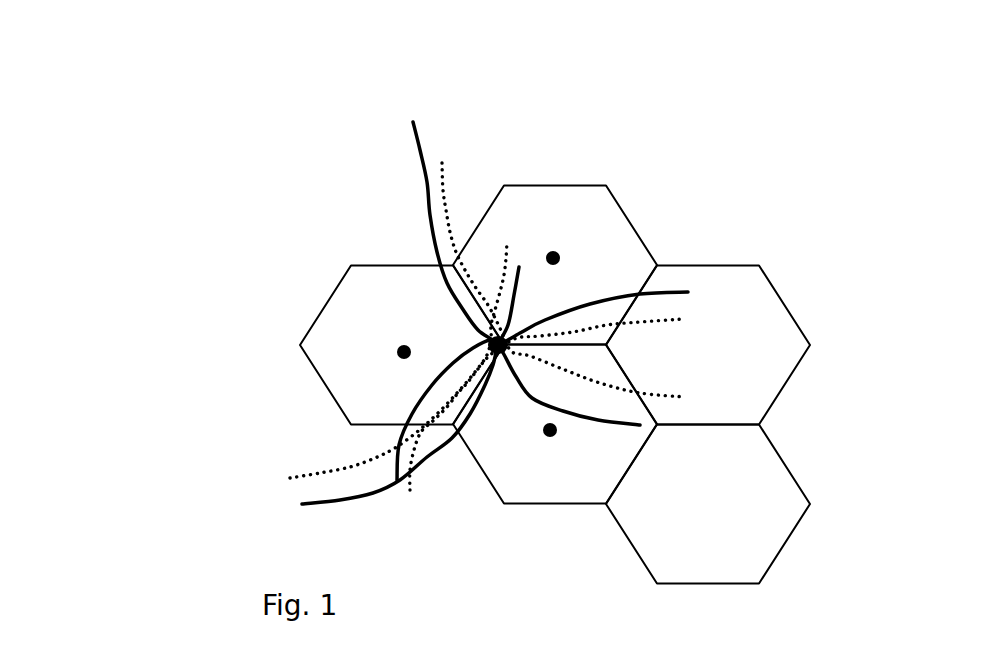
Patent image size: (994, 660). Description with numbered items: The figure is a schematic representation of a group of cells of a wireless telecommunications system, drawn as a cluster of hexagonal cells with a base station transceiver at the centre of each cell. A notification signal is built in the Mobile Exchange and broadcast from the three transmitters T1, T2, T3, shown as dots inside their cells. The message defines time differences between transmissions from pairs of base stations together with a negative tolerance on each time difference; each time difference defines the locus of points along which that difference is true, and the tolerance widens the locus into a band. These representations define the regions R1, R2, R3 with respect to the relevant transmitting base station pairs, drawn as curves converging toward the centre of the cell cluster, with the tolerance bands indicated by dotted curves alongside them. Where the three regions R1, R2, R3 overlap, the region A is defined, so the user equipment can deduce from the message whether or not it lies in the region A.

The region A is at (492, 341).
The transmitter T1 is at (553, 258).
The transmitter T2 is at (404, 352).
The transmitter T3 is at (550, 430).
The region R1 is at (536, 236).
The region R2 is at (298, 492).
The region R3 is at (685, 305).